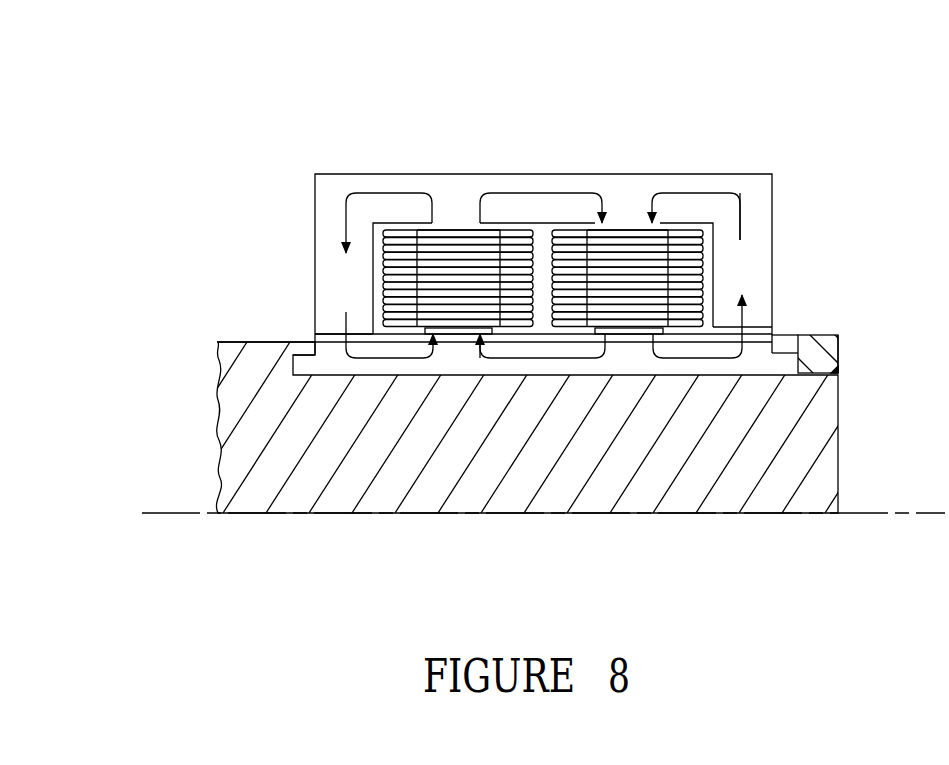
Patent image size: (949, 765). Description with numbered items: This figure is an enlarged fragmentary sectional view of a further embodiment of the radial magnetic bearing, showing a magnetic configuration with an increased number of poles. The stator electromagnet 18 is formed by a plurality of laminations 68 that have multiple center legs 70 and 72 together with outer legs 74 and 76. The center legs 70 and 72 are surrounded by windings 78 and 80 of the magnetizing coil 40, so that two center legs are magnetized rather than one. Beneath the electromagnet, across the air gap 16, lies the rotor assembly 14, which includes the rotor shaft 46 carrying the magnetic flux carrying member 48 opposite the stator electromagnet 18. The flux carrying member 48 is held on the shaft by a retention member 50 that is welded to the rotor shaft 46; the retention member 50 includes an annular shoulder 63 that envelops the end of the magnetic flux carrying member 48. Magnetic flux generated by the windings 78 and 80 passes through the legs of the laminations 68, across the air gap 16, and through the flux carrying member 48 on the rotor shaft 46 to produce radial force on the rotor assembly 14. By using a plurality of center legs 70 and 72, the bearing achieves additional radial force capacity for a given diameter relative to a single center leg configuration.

The rotor assembly 14 is at (257, 371).
The air gap 16 is at (316, 333).
The stator electromagnet 18 is at (355, 174).
The magnetizing coil 40 is at (705, 258).
The rotor shaft 46 is at (217, 437).
The magnetic flux carrying member 48 is at (773, 333).
The retention member 50 is at (841, 353).
The annular shoulder 63 is at (783, 344).
The laminations 68 is at (752, 179).
The center leg 70 is at (462, 225).
The center leg 72 is at (625, 225).
The outer leg 74 is at (332, 213).
The outer leg 76 is at (755, 240).
The winding 78 is at (457, 248).
The winding 80 is at (642, 248).